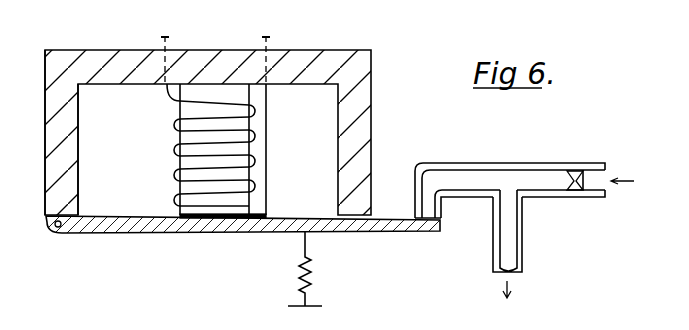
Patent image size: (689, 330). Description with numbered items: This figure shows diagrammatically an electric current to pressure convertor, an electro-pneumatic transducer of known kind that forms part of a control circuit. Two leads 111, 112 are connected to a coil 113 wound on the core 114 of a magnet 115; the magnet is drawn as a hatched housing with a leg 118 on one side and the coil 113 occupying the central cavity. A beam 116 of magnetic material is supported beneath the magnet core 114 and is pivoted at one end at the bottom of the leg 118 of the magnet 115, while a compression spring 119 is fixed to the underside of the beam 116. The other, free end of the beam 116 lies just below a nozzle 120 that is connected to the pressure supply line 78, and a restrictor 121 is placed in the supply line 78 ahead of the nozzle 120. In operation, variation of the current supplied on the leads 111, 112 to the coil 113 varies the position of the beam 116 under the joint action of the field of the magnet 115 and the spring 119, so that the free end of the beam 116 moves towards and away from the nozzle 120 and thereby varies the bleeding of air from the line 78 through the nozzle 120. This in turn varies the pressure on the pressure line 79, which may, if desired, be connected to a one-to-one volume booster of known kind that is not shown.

The pressure supply line 78 is at (605, 170).
The pressure line 79 is at (522, 262).
The lead 111 is at (168, 38).
The lead 112 is at (269, 38).
The coil 113 is at (177, 147).
The core 114 is at (233, 148).
The magnet 115 is at (100, 63).
The beam 116 is at (167, 230).
The housing wall 118 is at (57, 150).
The compression spring 119 is at (300, 282).
The nozzle 120 is at (437, 218).
The restrictor 121 is at (581, 171).